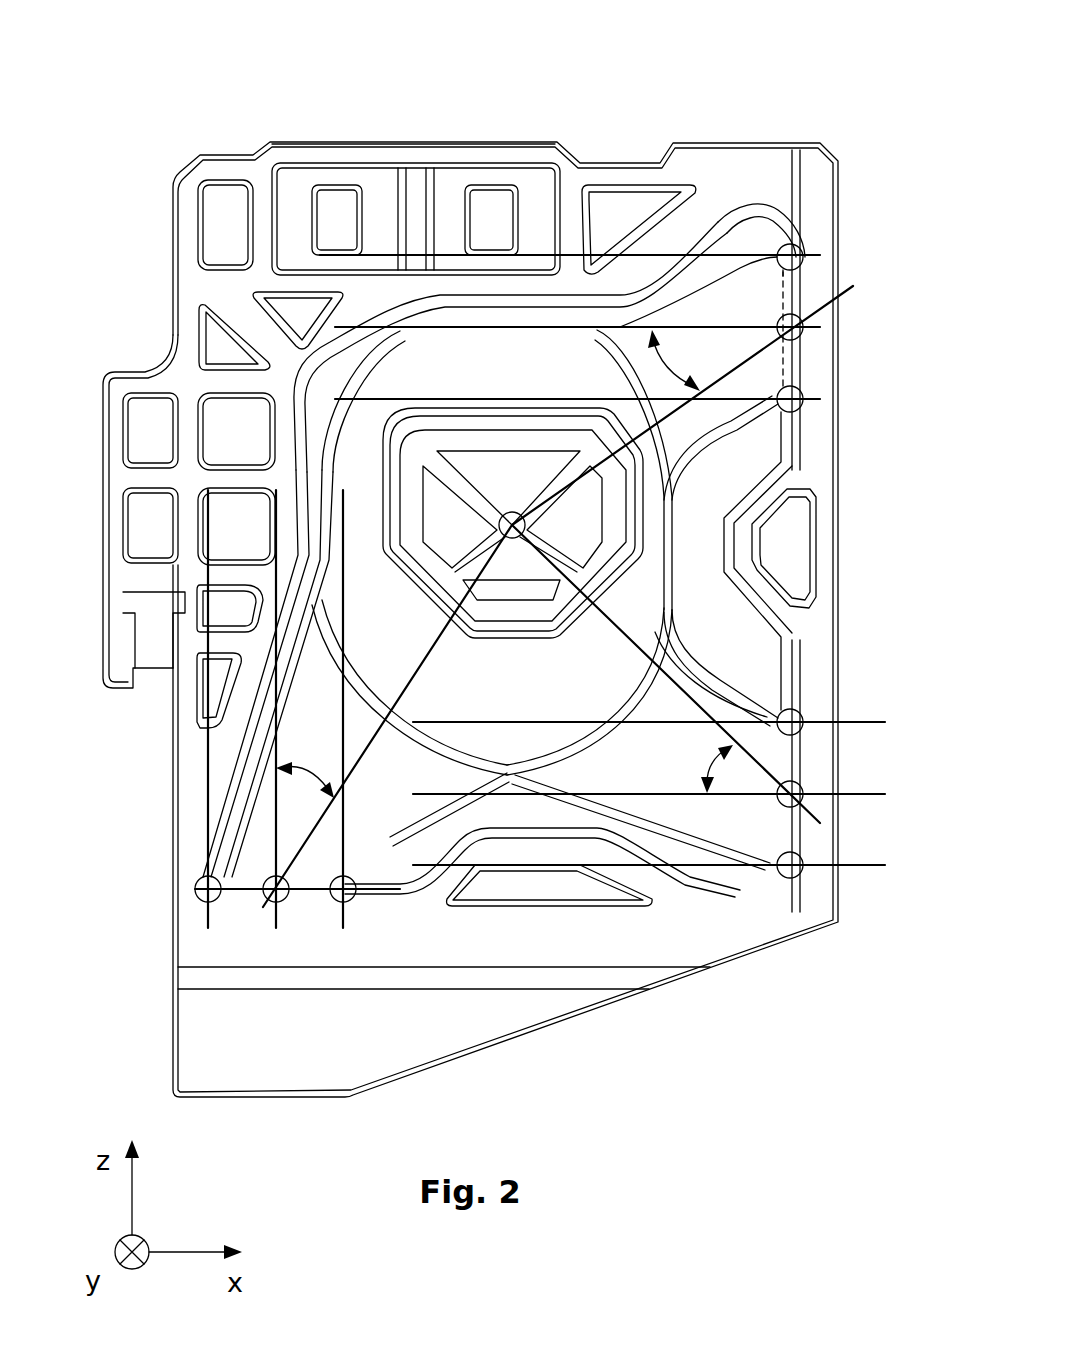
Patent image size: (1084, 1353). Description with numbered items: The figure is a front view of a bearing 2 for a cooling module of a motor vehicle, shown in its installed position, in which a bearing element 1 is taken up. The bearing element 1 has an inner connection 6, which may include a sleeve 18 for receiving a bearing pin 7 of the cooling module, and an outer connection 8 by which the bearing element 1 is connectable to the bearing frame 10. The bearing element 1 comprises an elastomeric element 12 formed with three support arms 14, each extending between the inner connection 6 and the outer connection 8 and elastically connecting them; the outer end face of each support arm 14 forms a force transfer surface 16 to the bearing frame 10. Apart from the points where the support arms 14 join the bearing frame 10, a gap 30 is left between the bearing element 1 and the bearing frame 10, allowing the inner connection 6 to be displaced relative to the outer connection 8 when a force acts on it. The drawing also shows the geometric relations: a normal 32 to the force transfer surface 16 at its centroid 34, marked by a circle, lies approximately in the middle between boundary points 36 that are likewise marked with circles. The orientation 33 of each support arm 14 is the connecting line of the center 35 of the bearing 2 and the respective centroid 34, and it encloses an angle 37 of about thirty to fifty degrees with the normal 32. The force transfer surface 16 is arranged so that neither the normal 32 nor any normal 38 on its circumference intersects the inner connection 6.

The bearing element 1 is at (357, 368).
The bearing 2 is at (337, 130).
The inner connection 6 is at (272, 445).
The bearing pin 7 is at (415, 492).
The outer connection 8 is at (771, 217).
The bearing frame 10 is at (500, 136).
The elastomeric element 12 is at (409, 534).
The support arm 14 is at (740, 282).
The force transfer surface 16 is at (807, 305).
The sleeve 18 is at (154, 630).
The gap 30 is at (398, 866).
The normal 32 is at (790, 326).
The orientation 33 is at (652, 434).
The centroid 34 is at (800, 395).
The center 35 is at (503, 512).
The boundary points 36 is at (795, 243).
The angle 37 is at (685, 368).
The normal on the circumference 38 is at (803, 252).